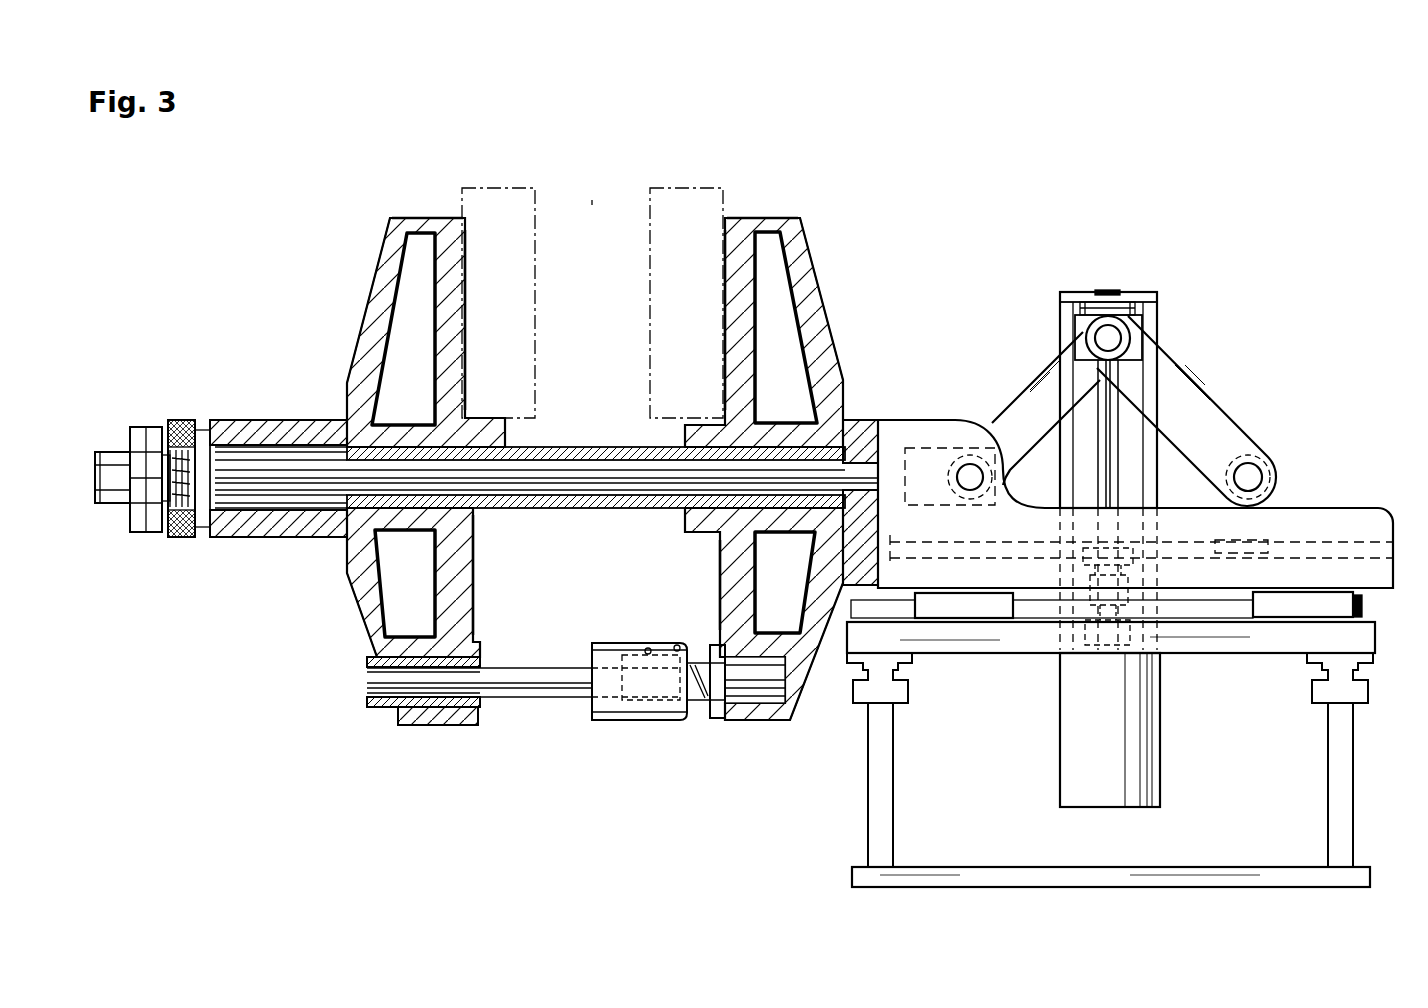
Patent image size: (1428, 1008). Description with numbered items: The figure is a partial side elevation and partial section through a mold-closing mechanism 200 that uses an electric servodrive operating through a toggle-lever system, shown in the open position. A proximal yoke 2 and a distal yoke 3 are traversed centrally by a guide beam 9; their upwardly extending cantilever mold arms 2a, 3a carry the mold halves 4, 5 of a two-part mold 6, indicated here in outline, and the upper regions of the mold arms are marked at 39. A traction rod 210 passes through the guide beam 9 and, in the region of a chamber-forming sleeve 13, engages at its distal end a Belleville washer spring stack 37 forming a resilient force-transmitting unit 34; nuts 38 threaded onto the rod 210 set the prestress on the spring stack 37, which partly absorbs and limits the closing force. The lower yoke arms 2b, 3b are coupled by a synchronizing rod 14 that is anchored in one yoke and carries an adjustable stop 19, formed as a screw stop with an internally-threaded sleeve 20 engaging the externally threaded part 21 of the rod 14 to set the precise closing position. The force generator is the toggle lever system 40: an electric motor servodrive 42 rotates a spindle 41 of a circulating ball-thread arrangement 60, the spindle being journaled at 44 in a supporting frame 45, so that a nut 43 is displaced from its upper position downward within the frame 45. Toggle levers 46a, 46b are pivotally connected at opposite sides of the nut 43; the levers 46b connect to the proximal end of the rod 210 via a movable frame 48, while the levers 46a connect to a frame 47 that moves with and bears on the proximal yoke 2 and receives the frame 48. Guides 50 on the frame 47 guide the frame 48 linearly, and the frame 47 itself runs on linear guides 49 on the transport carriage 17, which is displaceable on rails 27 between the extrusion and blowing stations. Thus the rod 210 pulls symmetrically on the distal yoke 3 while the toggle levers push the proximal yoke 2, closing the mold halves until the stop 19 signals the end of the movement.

The mold-closing mechanism 200 is at (852, 150).
The proximal yoke 2 is at (822, 296).
The cantilever mold arm 2a is at (725, 345).
The lower yoke arm 2b is at (718, 580).
The distal yoke 3 is at (374, 302).
The cantilever mold arm 3a is at (468, 352).
The lower yoke arm 3b is at (476, 568).
The mold half 4 is at (682, 207).
The mold half 5 is at (495, 207).
The two-part mold 6 is at (626, 166).
The guide beam 9 is at (575, 447).
The chamber-forming sleeve 13 is at (302, 527).
The synchronizing rod 14 is at (520, 692).
The transport carriage 17 is at (1195, 654).
The adjustable stop 19 is at (604, 746).
The internally-threaded sleeve 20 is at (615, 652).
The externally threaded part 21 is at (698, 716).
The rails 27 is at (888, 690).
The resilient force-transmitting unit 34 is at (168, 556).
The spring stack 37 is at (188, 536).
The nuts 38 is at (160, 432).
The wheel rim 39 is at (445, 230).
The toggle lever system 40 is at (1222, 322).
The spindle 41 is at (1100, 455).
The electric motor servodrive 42 is at (1145, 772).
The nut 43 is at (1145, 318).
The journal 44 is at (1088, 283).
The supporting frame 45 is at (1062, 335).
The toggle levers 46a is at (1010, 416).
The toggle levers 46b is at (1210, 414).
The frame 47 is at (917, 428).
The movable frame 48 is at (1218, 498).
The linear guides 49 is at (977, 612).
The guides 50 is at (968, 556).
The circulating ball-thread arrangement 60 is at (1082, 560).
The traction rod 210 is at (582, 492).